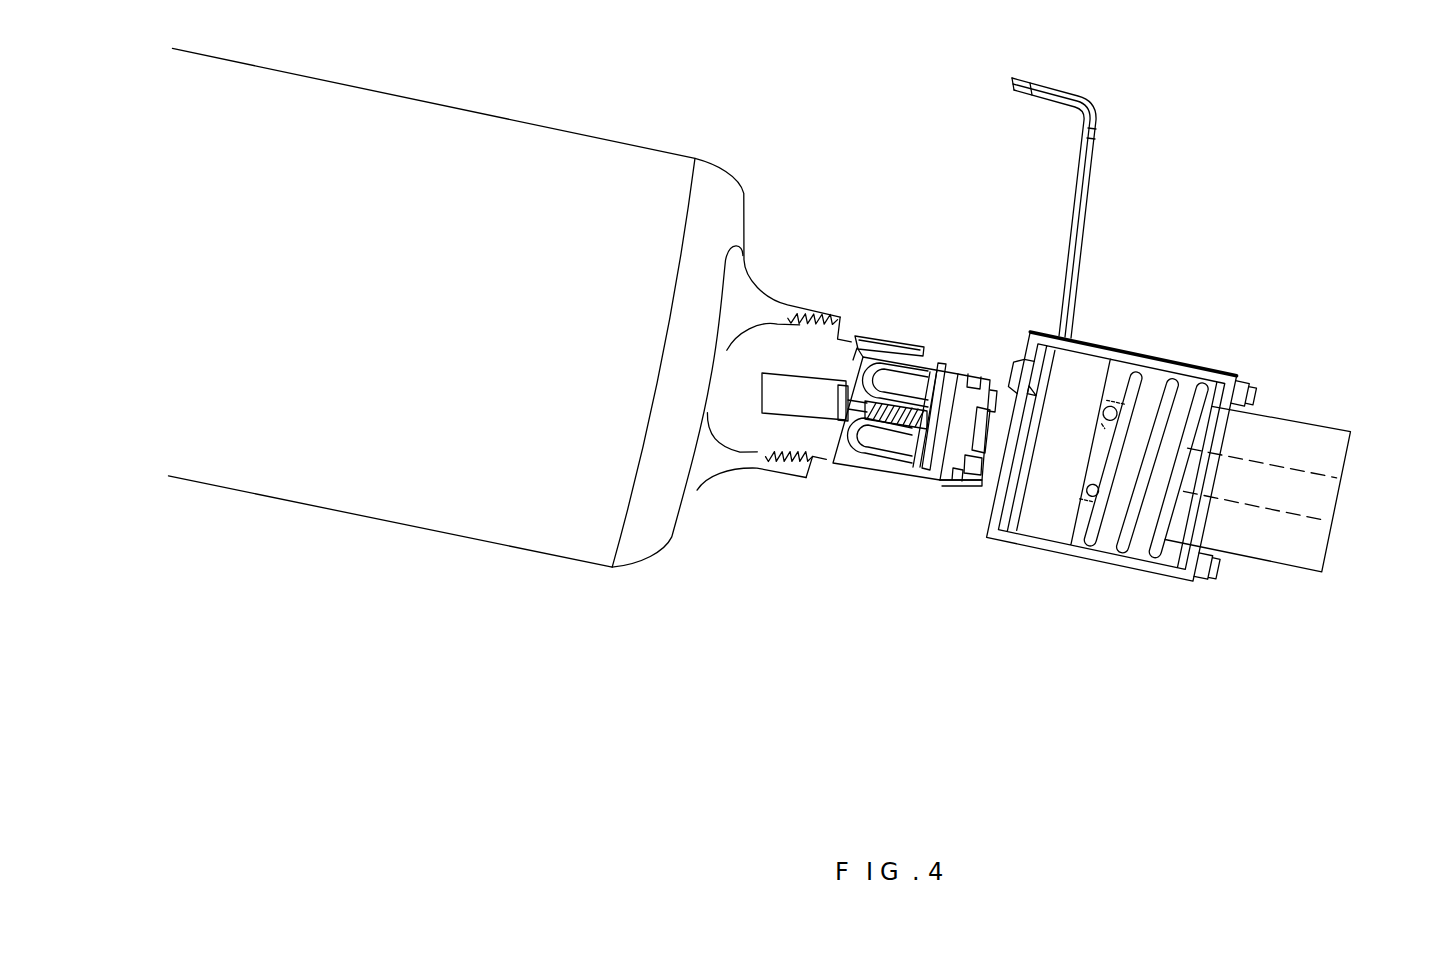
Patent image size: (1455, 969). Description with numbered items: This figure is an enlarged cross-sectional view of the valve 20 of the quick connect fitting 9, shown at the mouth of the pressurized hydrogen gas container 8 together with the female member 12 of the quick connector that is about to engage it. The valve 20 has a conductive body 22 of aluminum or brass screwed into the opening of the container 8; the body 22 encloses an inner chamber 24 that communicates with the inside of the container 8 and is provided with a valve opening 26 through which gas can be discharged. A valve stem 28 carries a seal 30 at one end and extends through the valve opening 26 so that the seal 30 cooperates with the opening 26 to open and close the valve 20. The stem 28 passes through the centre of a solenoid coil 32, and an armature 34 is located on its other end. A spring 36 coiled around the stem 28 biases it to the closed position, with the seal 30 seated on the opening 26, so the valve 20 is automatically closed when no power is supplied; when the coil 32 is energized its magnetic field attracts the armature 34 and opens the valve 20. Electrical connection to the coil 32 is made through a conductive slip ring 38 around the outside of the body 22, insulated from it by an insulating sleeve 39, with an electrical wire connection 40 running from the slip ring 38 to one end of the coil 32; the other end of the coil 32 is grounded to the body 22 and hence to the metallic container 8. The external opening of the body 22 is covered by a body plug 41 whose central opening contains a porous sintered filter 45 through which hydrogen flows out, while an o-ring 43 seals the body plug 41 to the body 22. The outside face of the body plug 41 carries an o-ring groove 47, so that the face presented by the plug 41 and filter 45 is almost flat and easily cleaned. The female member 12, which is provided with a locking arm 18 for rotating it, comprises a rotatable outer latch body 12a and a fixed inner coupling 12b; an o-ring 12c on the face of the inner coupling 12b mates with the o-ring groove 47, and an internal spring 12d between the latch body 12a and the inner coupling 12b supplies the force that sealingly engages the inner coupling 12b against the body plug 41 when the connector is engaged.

The pressurized hydrogen gas container 8 is at (546, 150).
The valve 20 is at (916, 358).
The quick connect fitting 9 is at (958, 238).
The locking arm 18 is at (1092, 190).
The female member 12 is at (1212, 468).
The rotatable outer latch body 12a is at (1095, 560).
The fixed inner coupling 12b is at (1338, 450).
The o-ring 12c is at (1090, 488).
The internal spring 12d is at (1168, 545).
The valve body 22 is at (797, 442).
The inner chamber 24 is at (762, 413).
The valve opening 26 is at (837, 447).
The valve stem 28 is at (895, 440).
The seal 30 is at (856, 335).
The coil 32 is at (870, 440).
The armature 34 is at (940, 350).
The spring 36 is at (873, 440).
The slip ring 38 is at (883, 330).
The insulating sleeve 39 is at (922, 355).
The electrical wire connection 40 is at (860, 455).
The body plug 41 is at (1000, 372).
The o-ring 43 is at (975, 350).
The porous sintered filter 45 is at (975, 475).
The o-ring groove 47 is at (983, 440).